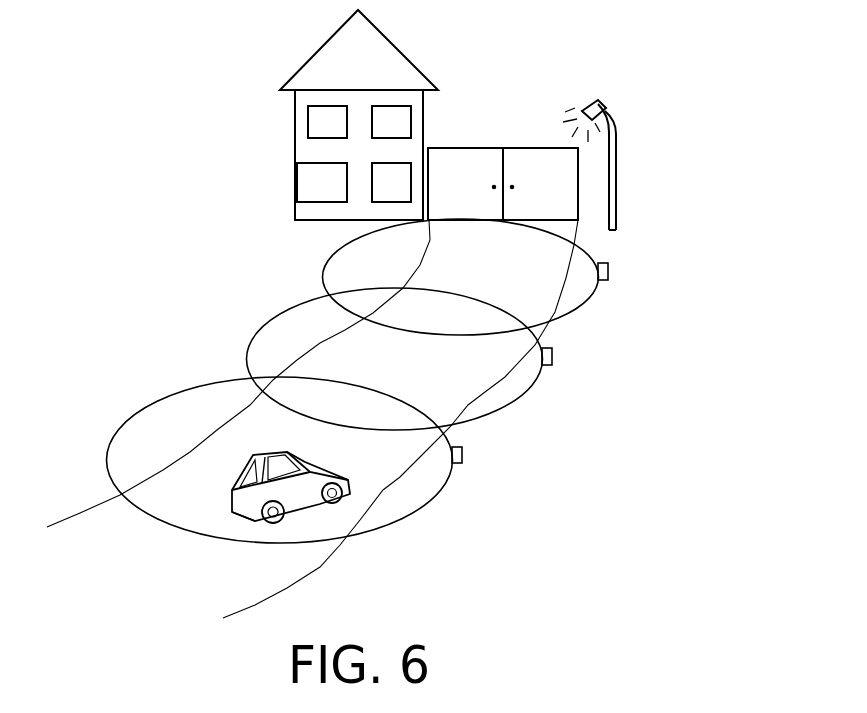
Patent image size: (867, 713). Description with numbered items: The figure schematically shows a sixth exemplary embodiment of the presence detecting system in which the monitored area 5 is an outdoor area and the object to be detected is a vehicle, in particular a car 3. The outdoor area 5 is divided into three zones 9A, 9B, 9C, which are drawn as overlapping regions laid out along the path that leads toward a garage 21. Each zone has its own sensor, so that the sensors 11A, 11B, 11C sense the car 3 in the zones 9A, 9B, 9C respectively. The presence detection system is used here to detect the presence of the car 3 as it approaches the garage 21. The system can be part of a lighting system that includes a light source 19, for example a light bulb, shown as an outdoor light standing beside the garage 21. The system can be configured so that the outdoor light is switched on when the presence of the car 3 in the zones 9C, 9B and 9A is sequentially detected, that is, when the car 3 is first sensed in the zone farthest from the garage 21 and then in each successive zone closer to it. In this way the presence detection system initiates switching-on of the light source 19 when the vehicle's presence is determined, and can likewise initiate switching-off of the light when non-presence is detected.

The car 3 is at (287, 495).
The area 5 is at (465, 378).
The zone 9A is at (352, 268).
The zone 9B is at (275, 340).
The zone 9C is at (155, 438).
The sensor 11A is at (608, 270).
The sensor 11B is at (552, 356).
The sensor 11C is at (462, 455).
The light source 19 is at (614, 111).
The garage 21 is at (508, 123).